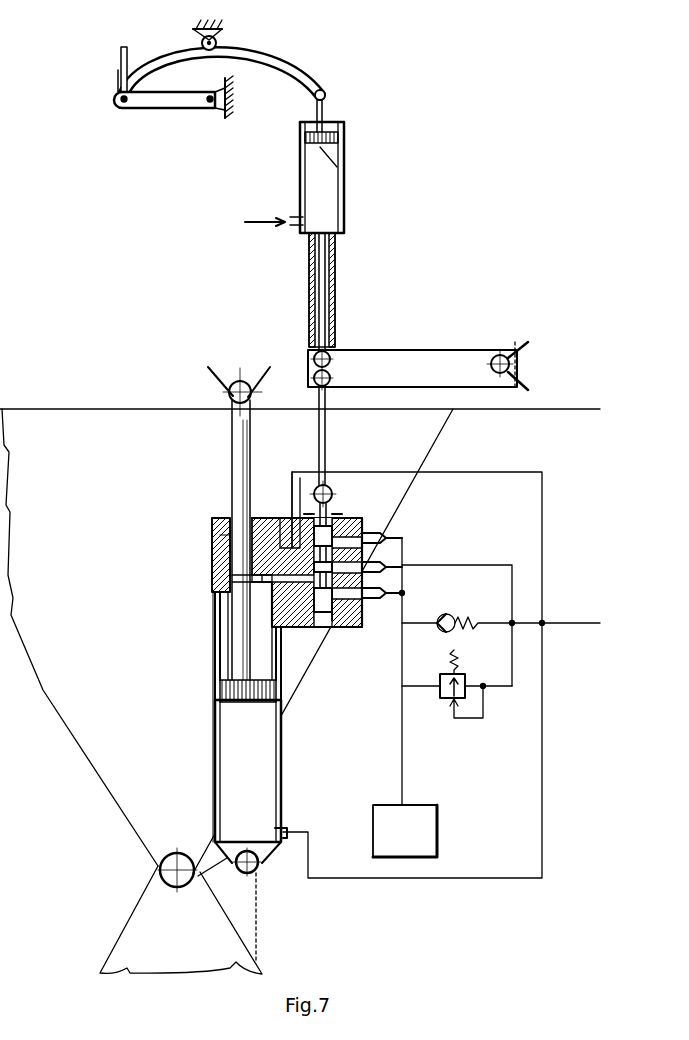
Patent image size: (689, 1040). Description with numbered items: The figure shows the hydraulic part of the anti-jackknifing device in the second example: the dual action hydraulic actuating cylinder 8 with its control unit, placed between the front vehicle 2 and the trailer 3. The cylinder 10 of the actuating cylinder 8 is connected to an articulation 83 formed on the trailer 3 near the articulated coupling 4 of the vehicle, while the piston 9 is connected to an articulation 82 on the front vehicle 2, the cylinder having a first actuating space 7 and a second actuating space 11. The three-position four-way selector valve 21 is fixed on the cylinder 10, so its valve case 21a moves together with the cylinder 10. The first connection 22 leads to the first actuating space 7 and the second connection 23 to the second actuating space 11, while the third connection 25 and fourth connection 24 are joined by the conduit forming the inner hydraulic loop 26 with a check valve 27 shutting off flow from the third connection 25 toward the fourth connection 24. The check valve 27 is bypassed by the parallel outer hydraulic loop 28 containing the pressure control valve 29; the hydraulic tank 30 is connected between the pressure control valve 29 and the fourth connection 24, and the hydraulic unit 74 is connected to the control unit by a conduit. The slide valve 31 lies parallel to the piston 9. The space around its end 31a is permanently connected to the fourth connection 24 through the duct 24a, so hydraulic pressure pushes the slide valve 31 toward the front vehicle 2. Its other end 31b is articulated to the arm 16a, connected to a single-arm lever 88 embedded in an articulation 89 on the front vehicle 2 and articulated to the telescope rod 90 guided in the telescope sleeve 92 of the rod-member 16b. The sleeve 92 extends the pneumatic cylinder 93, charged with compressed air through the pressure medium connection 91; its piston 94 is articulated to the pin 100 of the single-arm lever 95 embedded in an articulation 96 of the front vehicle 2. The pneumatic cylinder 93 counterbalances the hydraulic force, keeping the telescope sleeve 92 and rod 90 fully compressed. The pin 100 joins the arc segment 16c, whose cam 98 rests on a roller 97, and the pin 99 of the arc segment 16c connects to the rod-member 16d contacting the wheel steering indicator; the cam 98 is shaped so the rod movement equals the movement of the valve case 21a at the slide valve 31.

The front vehicle 2 is at (55, 682).
The trailer 3 is at (155, 908).
The vehicle coupling articulation 4 is at (160, 867).
The first actuating space 7 is at (227, 655).
The dual action hydraulic actuating cylinder 8 is at (218, 795).
The piston 9 is at (238, 508).
The cylinder 10 is at (213, 622).
The second actuating space 11 is at (237, 751).
The arm 16a is at (318, 398).
The rod-member 16b is at (300, 180).
The arc segment 16c is at (238, 62).
The rod-member 16d is at (118, 70).
The three-position four-way selector valve 21 is at (365, 525).
The valve case 21a is at (282, 515).
The first connection 22 is at (290, 628).
The second connection 23 is at (292, 510).
The fourth connection 24 is at (412, 575).
The duct 24a is at (365, 628).
The third connection 25 is at (448, 565).
The inner hydraulic loop 26 is at (420, 618).
The check valve 27 is at (460, 617).
The outer hydraulic loop 28 is at (403, 664).
The pressure control valve 29 is at (463, 703).
The hydraulic tank 30 is at (420, 834).
The slide valve 31 is at (342, 518).
The end of slide valve 31a is at (323, 612).
The end of slide valve 31b is at (327, 513).
The hydraulic unit 74 is at (563, 621).
The articulation 82 is at (228, 409).
The articulation 83 is at (255, 866).
The single-arm lever 88 is at (412, 360).
The articulation 89 is at (523, 340).
The telescope rod 90 is at (327, 300).
The pressure medium connection 91 is at (300, 228).
The telescope sleeve 92 is at (337, 274).
The pneumatic cylinder 93 is at (345, 222).
The piston 94 is at (343, 172).
The single-arm lever 95 is at (167, 100).
The pivot 96 is at (208, 110).
The roller 97 is at (196, 38).
The cam 98 is at (133, 72).
The pin 99 is at (118, 107).
The pin 100 is at (305, 105).